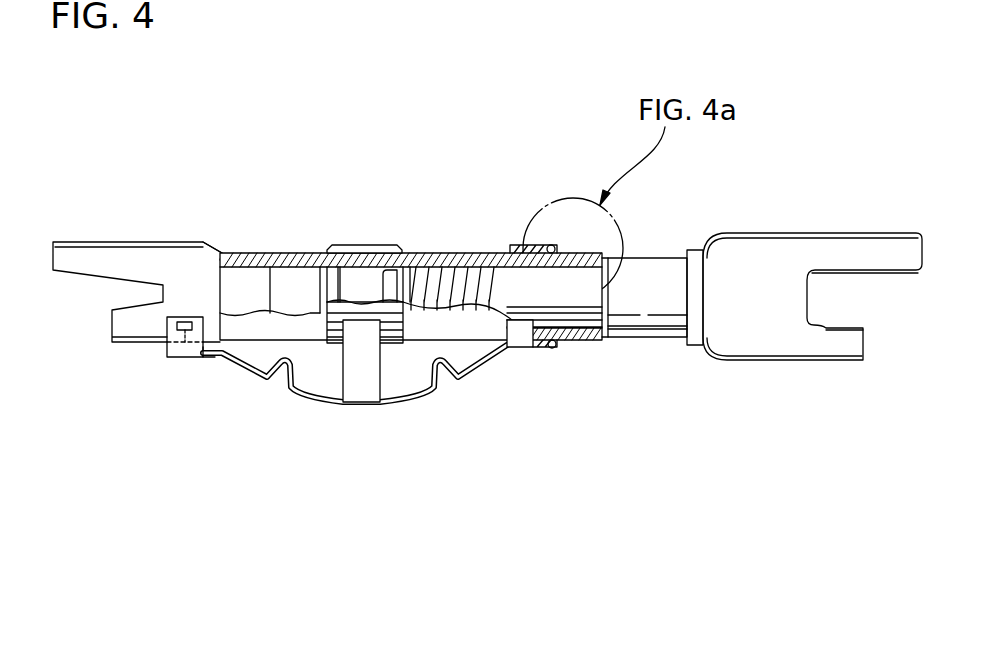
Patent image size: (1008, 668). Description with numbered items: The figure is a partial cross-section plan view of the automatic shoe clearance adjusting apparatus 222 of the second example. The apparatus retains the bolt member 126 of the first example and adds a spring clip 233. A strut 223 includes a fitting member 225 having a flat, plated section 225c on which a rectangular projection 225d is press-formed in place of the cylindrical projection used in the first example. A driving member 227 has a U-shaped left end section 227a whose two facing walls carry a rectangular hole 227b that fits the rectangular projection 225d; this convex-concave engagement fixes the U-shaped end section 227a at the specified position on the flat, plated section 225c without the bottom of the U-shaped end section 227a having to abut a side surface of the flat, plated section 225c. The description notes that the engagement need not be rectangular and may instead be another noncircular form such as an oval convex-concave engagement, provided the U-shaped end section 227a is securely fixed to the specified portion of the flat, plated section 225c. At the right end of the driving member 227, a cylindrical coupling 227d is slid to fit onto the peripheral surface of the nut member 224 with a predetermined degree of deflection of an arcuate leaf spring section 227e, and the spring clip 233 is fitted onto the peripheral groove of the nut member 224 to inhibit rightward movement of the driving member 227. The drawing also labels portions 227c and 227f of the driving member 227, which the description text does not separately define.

The bolt member 126 is at (810, 232).
The automatic shoe clearance adjusting apparatus 222 is at (463, 398).
The strut 223 is at (287, 253).
The nut member 224 is at (418, 253).
The fitting member 225 is at (147, 240).
The flat, plated section 225c is at (192, 257).
The rectangular projection 225d is at (176, 326).
The driving member 227 is at (355, 406).
The U-shaped left end section 227a is at (197, 357).
The rectangular hole 227b is at (185, 331).
The retaining portion 227c is at (530, 347).
The cylindrical coupling 227d is at (520, 247).
The arcuate leaf spring section 227e is at (333, 402).
The pin 227f is at (362, 383).
The spring clip 233 is at (553, 347).